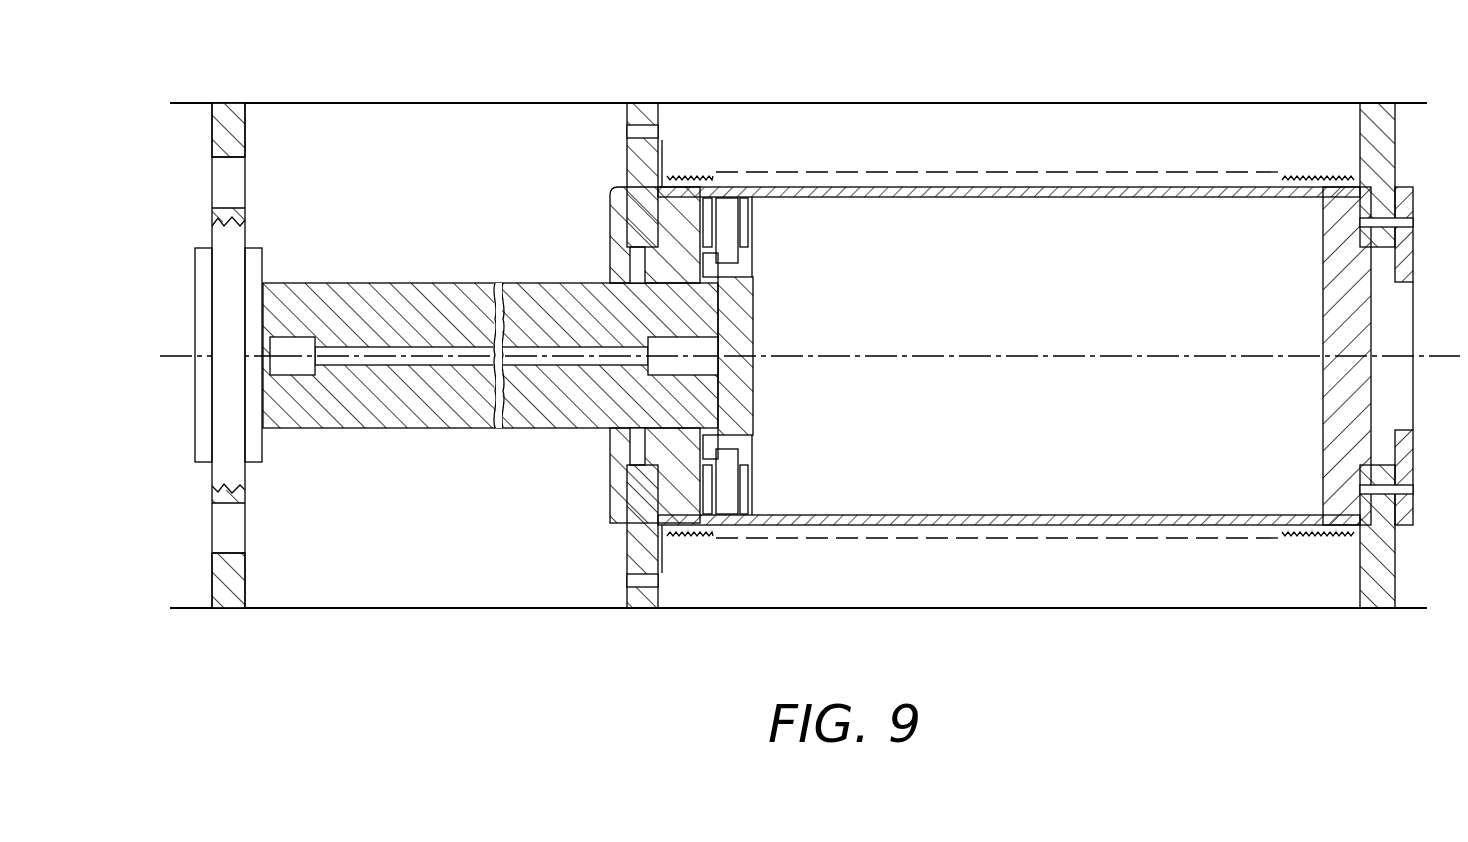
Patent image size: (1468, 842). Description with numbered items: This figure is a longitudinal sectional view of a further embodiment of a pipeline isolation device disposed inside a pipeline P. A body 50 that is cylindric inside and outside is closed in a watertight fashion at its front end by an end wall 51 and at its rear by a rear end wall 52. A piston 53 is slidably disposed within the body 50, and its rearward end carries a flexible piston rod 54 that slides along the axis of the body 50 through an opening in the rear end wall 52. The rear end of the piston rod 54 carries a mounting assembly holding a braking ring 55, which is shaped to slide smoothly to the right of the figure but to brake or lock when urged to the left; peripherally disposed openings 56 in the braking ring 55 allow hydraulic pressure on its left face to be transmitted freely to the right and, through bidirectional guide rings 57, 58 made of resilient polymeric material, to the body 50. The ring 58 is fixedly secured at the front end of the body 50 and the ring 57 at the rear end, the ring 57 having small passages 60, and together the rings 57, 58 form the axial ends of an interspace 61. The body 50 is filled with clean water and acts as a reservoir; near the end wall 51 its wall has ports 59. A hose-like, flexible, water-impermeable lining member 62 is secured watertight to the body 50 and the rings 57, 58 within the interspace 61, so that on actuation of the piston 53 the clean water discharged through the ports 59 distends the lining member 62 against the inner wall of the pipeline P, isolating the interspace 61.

The pipeline P is at (452, 103).
The body 50 is at (992, 197).
The end wall 51 is at (1342, 322).
The rear end wall 52 is at (612, 437).
The piston 53 is at (750, 320).
The flexible piston rod 54 is at (405, 288).
The braking ring 55 is at (242, 137).
The peripherally disposed openings 56 is at (233, 195).
The bidirectional guide ring 57 is at (642, 112).
The bidirectional guide ring 58 is at (1377, 127).
The ports 59 is at (1300, 198).
The small passages 60 is at (660, 131).
The interspace 61 is at (1046, 150).
The lining member 62 is at (703, 540).